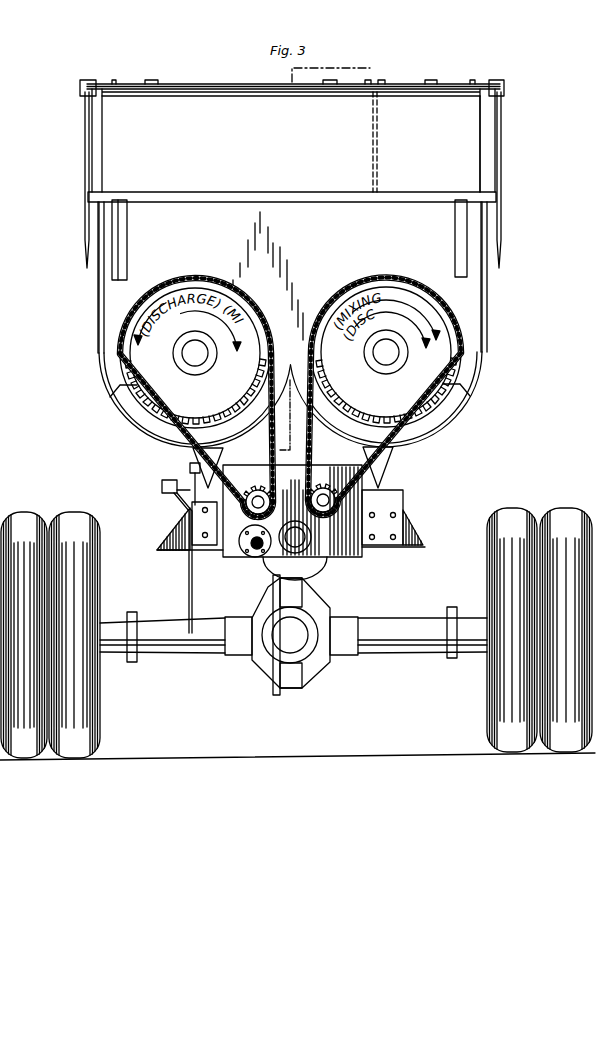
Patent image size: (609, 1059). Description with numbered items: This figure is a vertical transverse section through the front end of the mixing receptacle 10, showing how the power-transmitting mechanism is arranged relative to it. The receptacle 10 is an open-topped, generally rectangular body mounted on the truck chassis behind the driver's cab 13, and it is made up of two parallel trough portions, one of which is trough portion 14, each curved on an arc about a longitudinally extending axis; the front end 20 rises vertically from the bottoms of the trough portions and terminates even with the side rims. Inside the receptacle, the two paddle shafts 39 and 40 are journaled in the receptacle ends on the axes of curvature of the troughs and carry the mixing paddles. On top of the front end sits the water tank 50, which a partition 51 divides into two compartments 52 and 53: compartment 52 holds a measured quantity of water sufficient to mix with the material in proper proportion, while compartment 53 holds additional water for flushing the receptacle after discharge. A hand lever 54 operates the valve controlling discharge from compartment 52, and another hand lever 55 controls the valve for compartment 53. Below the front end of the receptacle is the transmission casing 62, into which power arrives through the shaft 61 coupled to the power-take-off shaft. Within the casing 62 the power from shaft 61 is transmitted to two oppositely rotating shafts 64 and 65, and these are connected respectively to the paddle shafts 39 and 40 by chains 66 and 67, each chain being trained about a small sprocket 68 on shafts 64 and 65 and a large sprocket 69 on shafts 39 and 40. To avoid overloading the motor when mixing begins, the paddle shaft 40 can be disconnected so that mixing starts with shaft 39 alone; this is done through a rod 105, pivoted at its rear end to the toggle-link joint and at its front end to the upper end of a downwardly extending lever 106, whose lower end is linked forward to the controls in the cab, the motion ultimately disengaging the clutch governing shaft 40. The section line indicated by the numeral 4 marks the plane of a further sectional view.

The section line 4- 4 is at (484, 63).
The mixing receptacle 10 is at (485, 316).
The driver's cab 13 is at (397, 262).
The trough portion 14 is at (200, 409).
The front end 20 is at (225, 195).
The paddle shaft 39 is at (388, 360).
The paddle shaft 40 is at (196, 362).
The tank 50 is at (192, 88).
The partition 51 is at (372, 128).
The compartment 52 is at (236, 100).
The compartment 53 is at (406, 103).
The hand lever 54 is at (86, 160).
The hand lever 55 is at (500, 174).
The shaft 61 is at (255, 548).
The transmission casing 62 is at (388, 547).
The shaft 64 is at (325, 488).
The shaft 65 is at (256, 489).
The chain 66 is at (440, 433).
The chain 67 is at (157, 430).
The small sprocket 68 is at (227, 545).
The large sprocket 69 is at (218, 418).
The rod 105 is at (165, 480).
The lever 106 is at (188, 581).